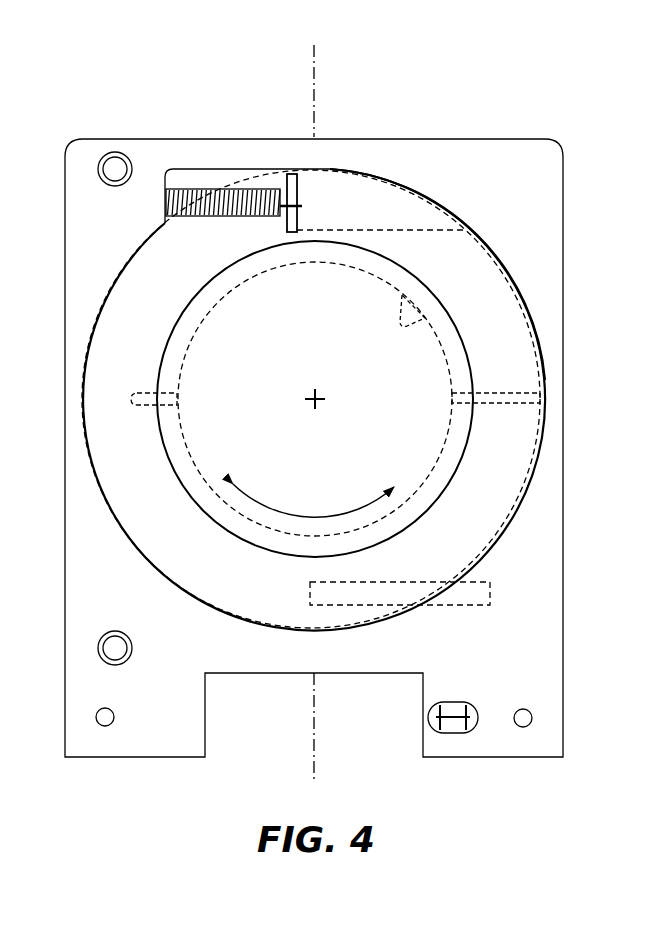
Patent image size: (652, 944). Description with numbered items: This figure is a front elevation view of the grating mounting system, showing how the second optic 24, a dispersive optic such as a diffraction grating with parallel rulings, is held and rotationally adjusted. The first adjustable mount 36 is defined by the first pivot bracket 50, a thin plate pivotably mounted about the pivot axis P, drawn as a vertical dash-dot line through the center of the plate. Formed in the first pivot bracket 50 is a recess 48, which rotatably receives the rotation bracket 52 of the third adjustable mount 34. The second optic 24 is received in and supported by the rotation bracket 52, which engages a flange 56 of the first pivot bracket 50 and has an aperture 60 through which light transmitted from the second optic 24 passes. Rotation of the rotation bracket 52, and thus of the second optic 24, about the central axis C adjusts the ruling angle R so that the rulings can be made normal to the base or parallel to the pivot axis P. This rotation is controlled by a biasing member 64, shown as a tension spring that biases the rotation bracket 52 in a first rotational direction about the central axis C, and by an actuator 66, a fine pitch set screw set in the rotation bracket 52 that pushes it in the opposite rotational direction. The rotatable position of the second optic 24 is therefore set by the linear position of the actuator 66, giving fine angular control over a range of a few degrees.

The second optic 24 is at (452, 315).
The third adjustable mount 34 is at (517, 512).
The first adjustable mount 36 is at (566, 583).
The recess 48 is at (376, 202).
The first pivot bracket 50 is at (532, 662).
The rotation bracket 52 is at (545, 353).
The flange 56 is at (338, 197).
The aperture 60 is at (425, 318).
The biasing member 64 is at (181, 190).
The actuator 66 is at (450, 608).
The pivot axis P is at (314, 95).
The central axis C is at (318, 395).
The ruling angle R is at (290, 515).